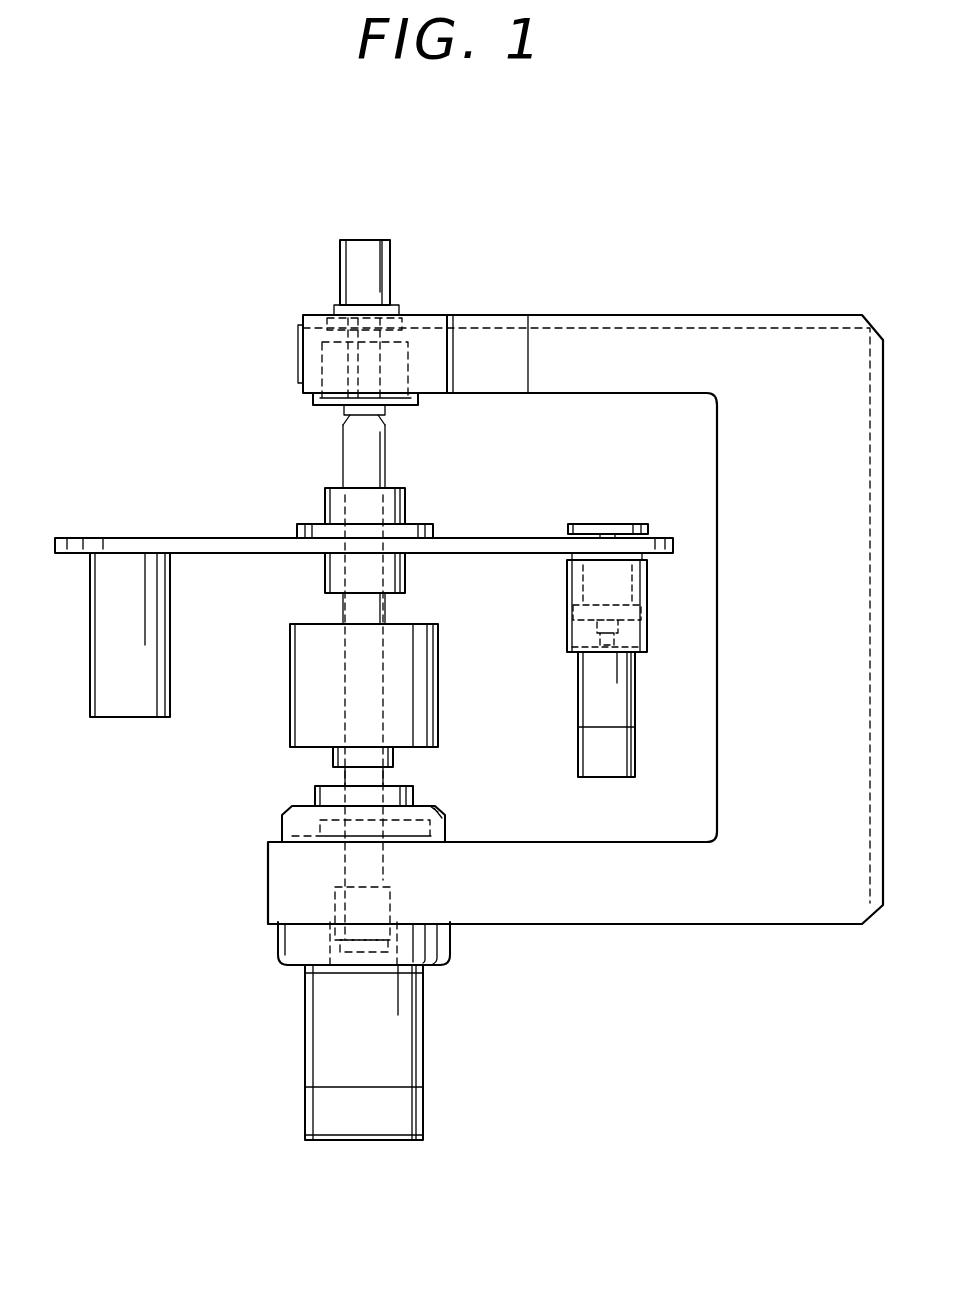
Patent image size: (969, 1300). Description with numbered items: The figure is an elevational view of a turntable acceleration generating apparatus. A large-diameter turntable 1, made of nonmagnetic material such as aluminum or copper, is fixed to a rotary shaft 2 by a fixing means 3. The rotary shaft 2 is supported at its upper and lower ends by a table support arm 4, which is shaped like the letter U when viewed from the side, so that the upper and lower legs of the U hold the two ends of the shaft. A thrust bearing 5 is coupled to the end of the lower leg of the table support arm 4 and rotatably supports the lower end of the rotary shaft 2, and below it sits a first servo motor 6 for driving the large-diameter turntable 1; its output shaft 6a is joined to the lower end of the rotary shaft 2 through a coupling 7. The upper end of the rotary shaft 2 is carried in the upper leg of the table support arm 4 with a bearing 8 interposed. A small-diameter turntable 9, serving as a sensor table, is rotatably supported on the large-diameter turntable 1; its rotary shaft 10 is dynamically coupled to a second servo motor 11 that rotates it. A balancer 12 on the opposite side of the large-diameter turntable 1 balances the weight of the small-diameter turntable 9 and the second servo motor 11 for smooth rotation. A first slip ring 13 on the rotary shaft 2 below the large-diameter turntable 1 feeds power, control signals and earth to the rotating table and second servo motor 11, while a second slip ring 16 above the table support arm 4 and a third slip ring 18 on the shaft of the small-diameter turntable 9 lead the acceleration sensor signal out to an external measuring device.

The large-diameter turntable 1 is at (195, 545).
The rotary shaft 2 is at (367, 462).
The fixing means 3 is at (337, 497).
The table support arm 4 is at (553, 320).
The thrust bearing 5 is at (448, 825).
The first servo motor 6 is at (400, 1076).
The output shaft 6a is at (330, 946).
The coupling 7 is at (347, 902).
The bearing 8 is at (398, 358).
The small-diameter turntable 9 is at (620, 525).
The rotary shaft 10 is at (605, 524).
The second servo motor 11 is at (612, 705).
The balancer 12 is at (112, 663).
The first slip ring 13 is at (305, 712).
The second slip ring 16 is at (348, 266).
The third slip ring 18 is at (640, 612).